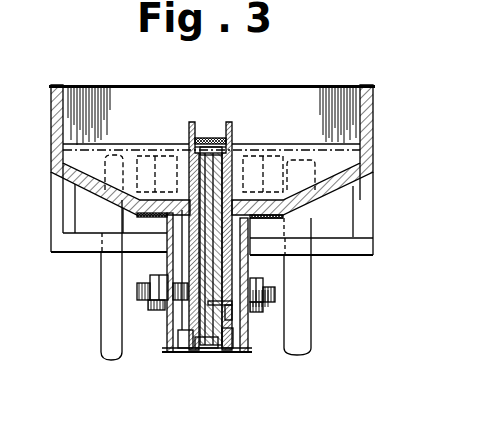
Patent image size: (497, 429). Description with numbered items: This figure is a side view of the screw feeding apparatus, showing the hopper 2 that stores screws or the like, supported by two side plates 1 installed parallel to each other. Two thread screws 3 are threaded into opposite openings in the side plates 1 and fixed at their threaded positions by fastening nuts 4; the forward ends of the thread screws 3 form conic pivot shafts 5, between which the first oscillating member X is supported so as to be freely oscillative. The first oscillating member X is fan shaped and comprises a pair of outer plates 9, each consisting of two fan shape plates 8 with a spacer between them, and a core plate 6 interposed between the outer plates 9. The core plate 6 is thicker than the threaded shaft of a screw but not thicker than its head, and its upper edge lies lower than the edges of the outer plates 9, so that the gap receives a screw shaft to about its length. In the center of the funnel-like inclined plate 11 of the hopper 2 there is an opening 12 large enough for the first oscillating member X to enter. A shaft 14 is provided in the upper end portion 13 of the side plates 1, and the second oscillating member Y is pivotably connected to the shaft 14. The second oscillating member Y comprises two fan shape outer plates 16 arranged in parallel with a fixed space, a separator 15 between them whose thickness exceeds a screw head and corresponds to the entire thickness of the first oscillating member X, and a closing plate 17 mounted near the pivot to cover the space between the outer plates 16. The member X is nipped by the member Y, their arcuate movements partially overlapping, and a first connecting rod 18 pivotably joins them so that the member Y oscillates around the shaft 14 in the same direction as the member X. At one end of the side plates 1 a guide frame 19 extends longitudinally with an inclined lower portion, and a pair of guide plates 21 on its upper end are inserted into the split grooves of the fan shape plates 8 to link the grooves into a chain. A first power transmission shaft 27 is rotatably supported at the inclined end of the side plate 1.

The side plate 1 is at (166, 316).
The hopper 2 is at (375, 118).
The thread screw 3 is at (140, 291).
The fastening nut 4 is at (150, 303).
The conic pivot shaft 5 is at (160, 277).
The core plate 6 is at (203, 350).
The fan shape plate 8 is at (185, 340).
The outer plate 9 is at (174, 278).
The funnel-like inclined plate 11 is at (344, 197).
The opening 12 is at (236, 190).
The upper end portion 13 is at (170, 165).
The shaft 14 is at (155, 182).
The separator 15 is at (212, 138).
The fan shape outer plate 16 is at (192, 122).
The closing plate 17 is at (217, 141).
The first connecting rod 18 is at (260, 236).
The guide frame 19 is at (250, 343).
The guide plate 21 is at (224, 353).
The first power transmission shaft 27 is at (101, 360).
The first oscillating member X is at (186, 320).
The second oscillating member Y is at (188, 139).